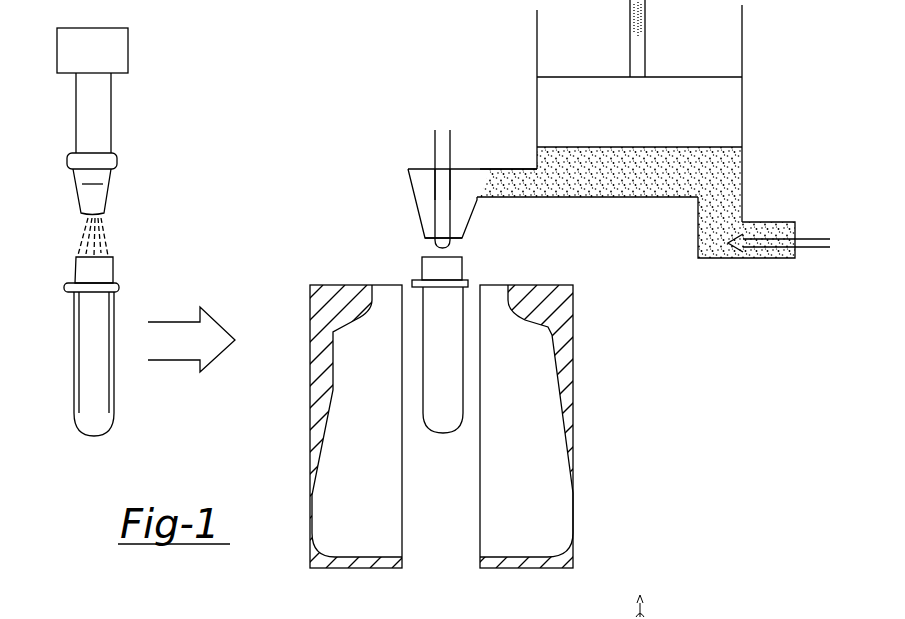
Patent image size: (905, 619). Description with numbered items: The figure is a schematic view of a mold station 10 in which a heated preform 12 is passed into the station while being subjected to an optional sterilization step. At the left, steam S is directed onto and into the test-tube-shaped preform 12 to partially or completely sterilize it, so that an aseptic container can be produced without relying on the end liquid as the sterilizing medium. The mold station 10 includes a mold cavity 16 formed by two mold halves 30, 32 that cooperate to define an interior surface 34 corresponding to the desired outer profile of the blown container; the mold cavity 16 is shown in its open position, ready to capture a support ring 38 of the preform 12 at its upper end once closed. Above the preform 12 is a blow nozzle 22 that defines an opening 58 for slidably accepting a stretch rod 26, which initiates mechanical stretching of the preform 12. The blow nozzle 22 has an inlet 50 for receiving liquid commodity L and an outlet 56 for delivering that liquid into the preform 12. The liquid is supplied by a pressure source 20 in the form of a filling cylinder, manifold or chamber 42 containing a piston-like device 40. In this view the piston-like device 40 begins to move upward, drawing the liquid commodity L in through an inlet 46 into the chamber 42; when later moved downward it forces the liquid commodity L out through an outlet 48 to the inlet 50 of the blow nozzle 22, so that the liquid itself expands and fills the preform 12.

The mold station 10 is at (370, 55).
The preform 12 is at (467, 298).
The mold cavity 16 is at (548, 345).
The pressure source 20 is at (742, 45).
The blow nozzle 22 is at (408, 183).
The stretch rod 26 is at (435, 133).
The mold half 30 is at (357, 426).
The mold half 32 is at (527, 426).
The interior surface 34 is at (330, 407).
The support ring 38 is at (408, 285).
The piston-like device 40 is at (733, 108).
The filling cylinder, manifold or chamber 42 is at (548, 30).
The inlet 46 is at (777, 259).
The outlet 48 is at (510, 197).
The inlet 50 is at (514, 170).
The outlet 56 is at (425, 245).
The opening 58 is at (435, 168).
The liquid commodity L is at (720, 178).
The steam S is at (78, 243).